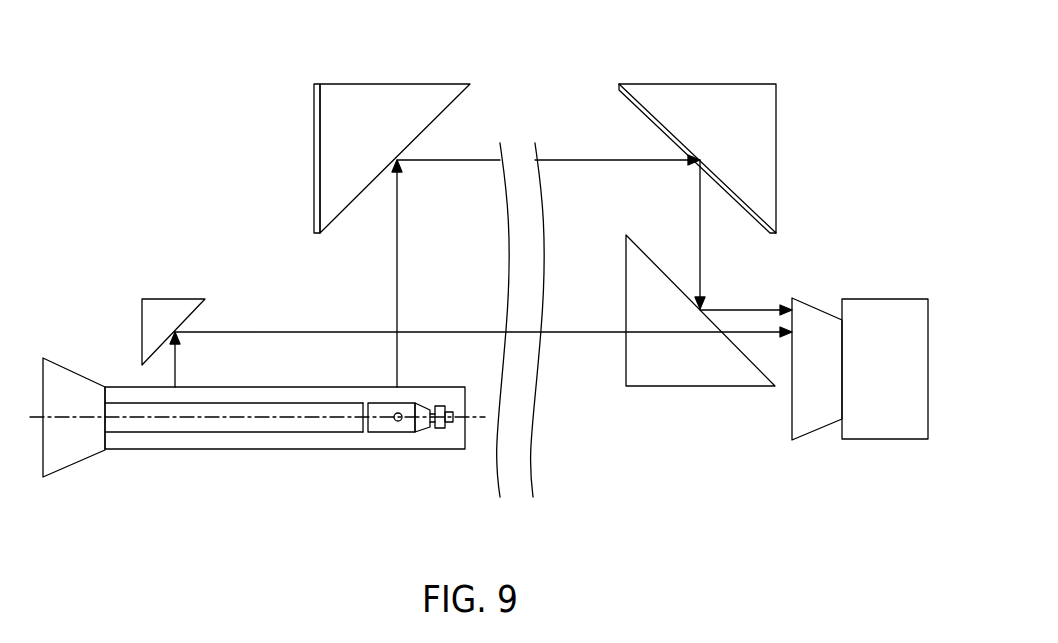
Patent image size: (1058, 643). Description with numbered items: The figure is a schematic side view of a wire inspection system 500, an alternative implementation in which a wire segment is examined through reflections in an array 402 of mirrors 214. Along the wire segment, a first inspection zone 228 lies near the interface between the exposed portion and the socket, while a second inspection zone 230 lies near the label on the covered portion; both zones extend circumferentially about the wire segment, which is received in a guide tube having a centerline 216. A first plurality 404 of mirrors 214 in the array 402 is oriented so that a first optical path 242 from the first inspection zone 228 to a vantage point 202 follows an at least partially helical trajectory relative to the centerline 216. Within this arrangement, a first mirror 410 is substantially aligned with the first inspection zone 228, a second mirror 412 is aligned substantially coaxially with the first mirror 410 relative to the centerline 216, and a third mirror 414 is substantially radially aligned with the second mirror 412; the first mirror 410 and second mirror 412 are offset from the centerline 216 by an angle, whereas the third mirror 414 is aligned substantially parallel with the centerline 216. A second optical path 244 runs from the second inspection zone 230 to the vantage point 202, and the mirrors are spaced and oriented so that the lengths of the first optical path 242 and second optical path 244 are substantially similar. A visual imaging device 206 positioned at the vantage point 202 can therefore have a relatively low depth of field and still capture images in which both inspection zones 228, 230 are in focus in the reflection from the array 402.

The array of mirrors 402 is at (190, 107).
The wire inspection system 500 is at (829, 53).
The mirror 214 is at (472, 193).
The first mirror 410 is at (345, 84).
The first plurality of mirrors 404 is at (697, 116).
The second mirror 412 is at (645, 84).
The third mirror 414 is at (626, 318).
The first optical path 242 is at (397, 200).
The second optical path 244 is at (268, 332).
The second inspection zone 230 is at (175, 445).
The first inspection zone 228 is at (398, 445).
The centerline 216 is at (483, 412).
The vantage point 202 is at (871, 350).
The visual imaging device 206 is at (875, 440).